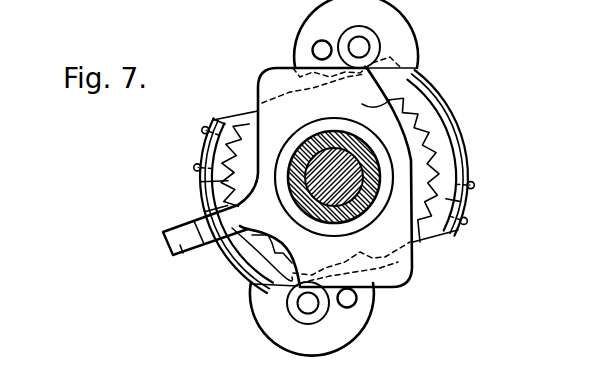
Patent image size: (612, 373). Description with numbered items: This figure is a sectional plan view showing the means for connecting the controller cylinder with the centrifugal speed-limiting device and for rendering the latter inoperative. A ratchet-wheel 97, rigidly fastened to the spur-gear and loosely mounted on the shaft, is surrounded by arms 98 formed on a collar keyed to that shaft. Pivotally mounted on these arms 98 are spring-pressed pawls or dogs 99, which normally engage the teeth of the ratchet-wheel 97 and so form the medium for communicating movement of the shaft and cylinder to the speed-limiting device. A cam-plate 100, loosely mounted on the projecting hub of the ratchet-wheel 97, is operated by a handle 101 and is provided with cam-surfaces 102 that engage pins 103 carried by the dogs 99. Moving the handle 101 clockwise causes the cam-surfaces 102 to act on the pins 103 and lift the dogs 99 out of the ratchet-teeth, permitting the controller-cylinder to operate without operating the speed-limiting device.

The ratchet-wheel 97 is at (398, 115).
The arms 98 is at (444, 132).
The spring-pressed pawls or dogs 99 is at (398, 43).
The cam-plate 100 is at (368, 70).
The handle 101 is at (178, 257).
The cam-surfaces 102 is at (293, 65).
The pins 103 is at (320, 49).